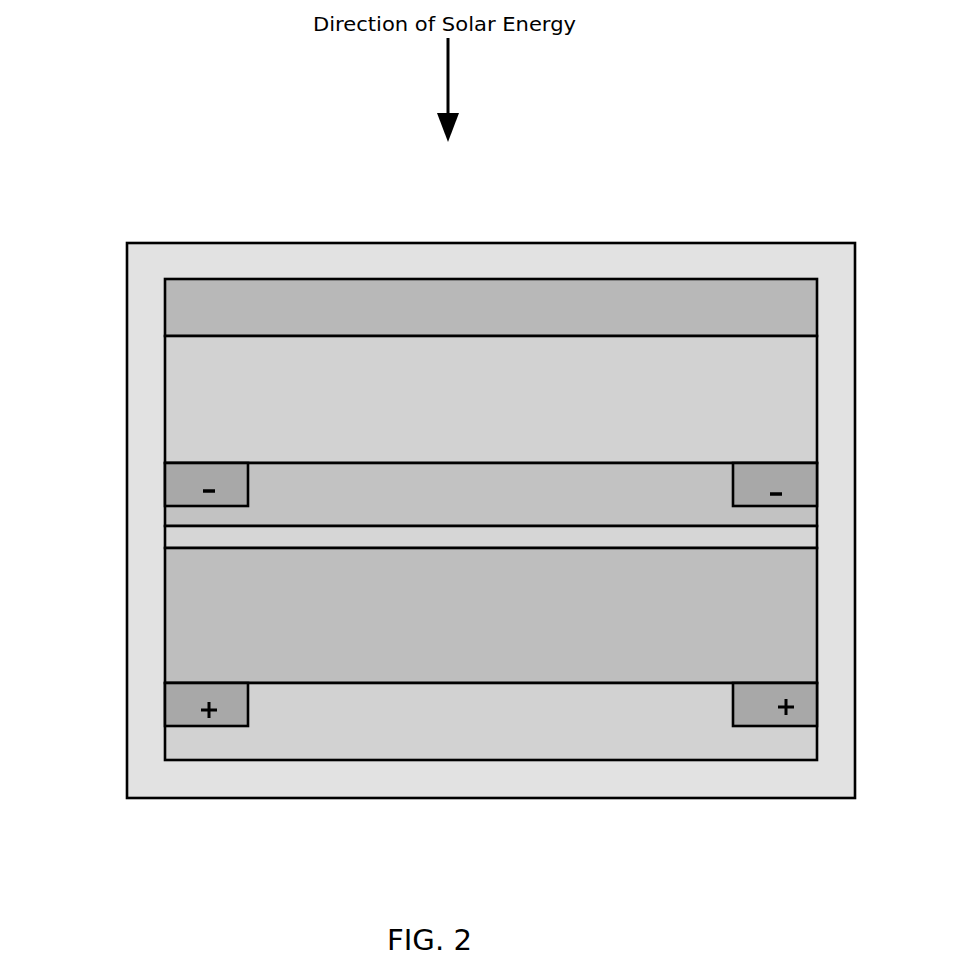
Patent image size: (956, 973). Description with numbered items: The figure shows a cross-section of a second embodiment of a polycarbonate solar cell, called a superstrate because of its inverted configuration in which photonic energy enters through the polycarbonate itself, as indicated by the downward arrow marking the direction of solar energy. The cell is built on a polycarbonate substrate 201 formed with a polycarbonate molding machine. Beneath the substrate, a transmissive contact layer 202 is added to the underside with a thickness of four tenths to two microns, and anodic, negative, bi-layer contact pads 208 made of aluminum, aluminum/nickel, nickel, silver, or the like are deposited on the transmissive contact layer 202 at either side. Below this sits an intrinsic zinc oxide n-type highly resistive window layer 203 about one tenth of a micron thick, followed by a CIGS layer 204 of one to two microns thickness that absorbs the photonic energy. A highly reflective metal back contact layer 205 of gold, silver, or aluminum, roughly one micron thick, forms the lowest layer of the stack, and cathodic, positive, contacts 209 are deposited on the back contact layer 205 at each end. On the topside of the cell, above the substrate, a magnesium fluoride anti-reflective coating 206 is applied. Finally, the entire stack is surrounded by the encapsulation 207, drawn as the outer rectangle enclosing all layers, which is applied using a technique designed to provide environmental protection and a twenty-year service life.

The polycarbonate substrate 201 is at (165, 425).
The transmissive contact layer 202 is at (165, 519).
The n-type highly resistive window layer 203 is at (165, 540).
The CIGS layer 204 is at (165, 640).
The back contact layer 205 is at (165, 748).
The anti-reflective coating 206 is at (165, 321).
The encapsulation 207 is at (128, 256).
The anodic bi-layer contact pads 208 is at (165, 485).
The cathodic contacts 209 is at (165, 707).